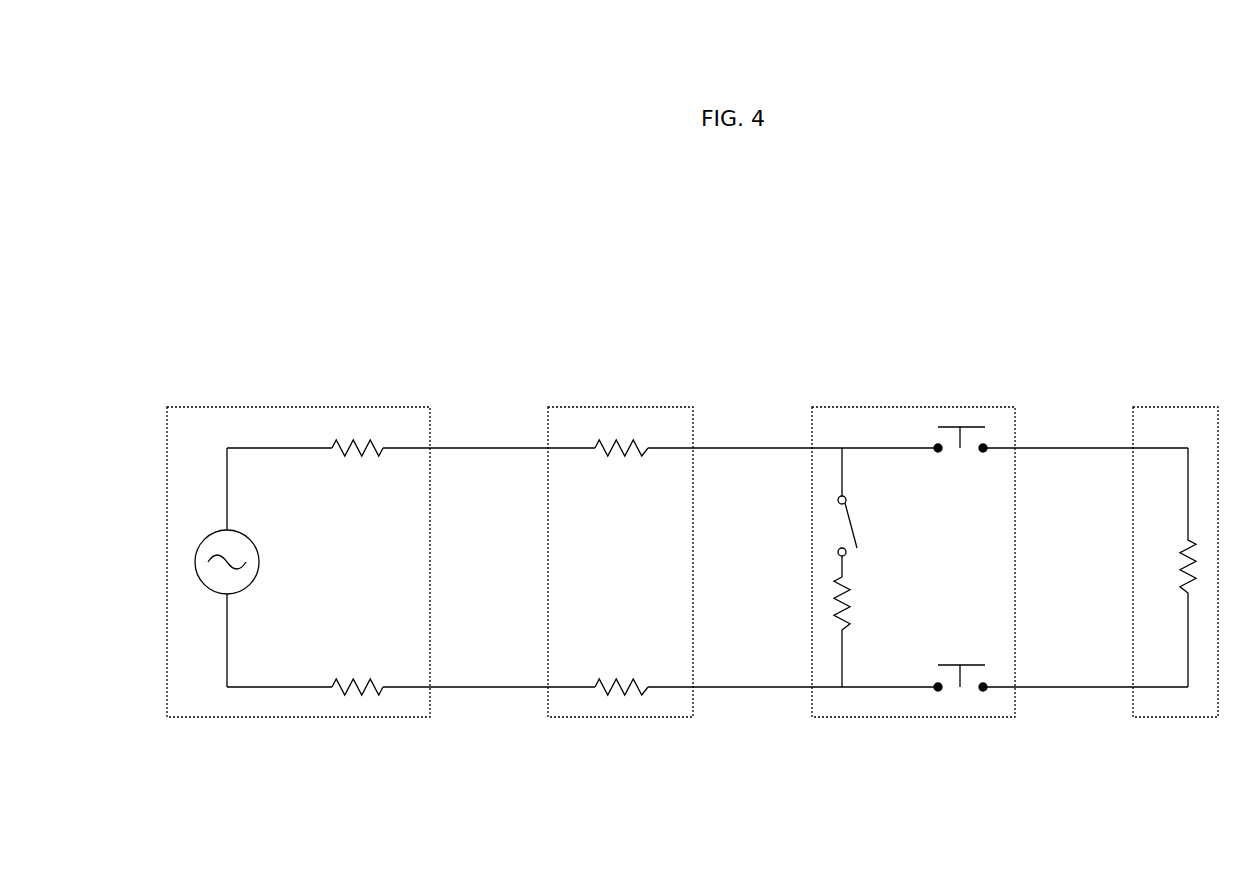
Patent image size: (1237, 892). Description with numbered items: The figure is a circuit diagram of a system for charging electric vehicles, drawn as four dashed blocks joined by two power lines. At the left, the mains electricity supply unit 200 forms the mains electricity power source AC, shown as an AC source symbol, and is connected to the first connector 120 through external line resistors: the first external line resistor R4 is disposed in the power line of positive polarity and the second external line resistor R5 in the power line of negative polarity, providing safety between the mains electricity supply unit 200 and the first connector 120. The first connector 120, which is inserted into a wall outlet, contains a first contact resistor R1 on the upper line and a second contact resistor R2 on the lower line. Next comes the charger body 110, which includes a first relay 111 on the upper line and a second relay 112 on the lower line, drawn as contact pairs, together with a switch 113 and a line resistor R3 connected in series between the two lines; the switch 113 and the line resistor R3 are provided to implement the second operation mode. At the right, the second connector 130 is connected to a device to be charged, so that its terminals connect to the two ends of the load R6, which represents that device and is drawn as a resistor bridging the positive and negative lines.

The mains electricity supply unit 200 is at (293, 407).
The first connector 120 is at (622, 407).
The charger body 110 is at (878, 407).
The first relay 111 is at (958, 427).
The second relay 112 is at (958, 665).
The switch 113 is at (845, 525).
The second connector 130 is at (1180, 407).
The first contact resistor R1 is at (621, 465).
The second contact resistor R2 is at (621, 675).
The line resistor R3 is at (861, 632).
The first external line resistor R4 is at (357, 465).
The second external line resistor R5 is at (357, 675).
The load R6 is at (1170, 567).